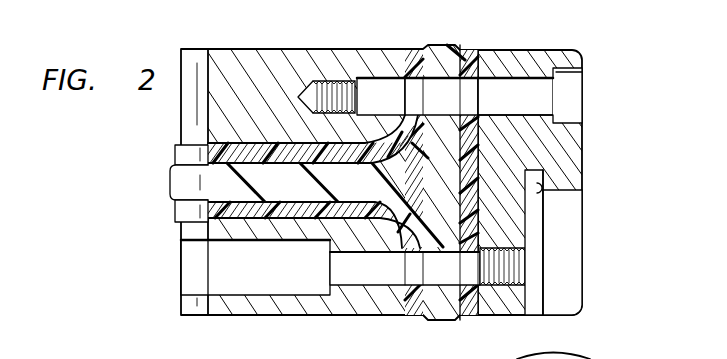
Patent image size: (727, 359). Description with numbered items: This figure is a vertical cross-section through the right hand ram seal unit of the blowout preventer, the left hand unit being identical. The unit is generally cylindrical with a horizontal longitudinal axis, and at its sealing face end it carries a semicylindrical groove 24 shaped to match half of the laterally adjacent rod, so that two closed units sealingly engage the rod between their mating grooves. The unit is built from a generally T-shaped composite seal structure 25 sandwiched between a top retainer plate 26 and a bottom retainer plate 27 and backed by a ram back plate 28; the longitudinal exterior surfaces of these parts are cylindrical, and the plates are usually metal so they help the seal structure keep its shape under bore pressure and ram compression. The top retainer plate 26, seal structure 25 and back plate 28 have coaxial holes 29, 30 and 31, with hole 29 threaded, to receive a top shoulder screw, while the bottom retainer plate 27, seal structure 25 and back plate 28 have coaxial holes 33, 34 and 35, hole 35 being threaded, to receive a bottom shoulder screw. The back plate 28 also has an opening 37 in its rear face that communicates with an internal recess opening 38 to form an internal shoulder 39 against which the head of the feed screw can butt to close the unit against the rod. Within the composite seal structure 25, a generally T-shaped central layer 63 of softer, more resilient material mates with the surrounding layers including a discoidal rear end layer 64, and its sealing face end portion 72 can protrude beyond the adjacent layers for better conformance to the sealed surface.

The semicylindrical groove 24 is at (197, 270).
The composite seal structure 25 is at (176, 150).
The top retainer plate 26 is at (228, 50).
The bottom retainer plate 27 is at (240, 316).
The ram back plate 28 is at (528, 50).
The hole 29 is at (393, 110).
The hole 30 is at (455, 110).
The hole 31 is at (531, 110).
The hole 33 is at (262, 281).
The hole 34 is at (457, 283).
The hole 35 is at (512, 267).
The opening 37 is at (568, 243).
The internal recess opening 38 is at (538, 292).
The internal shoulder 39 is at (543, 192).
The central layer 63 is at (458, 192).
The rear end layer 64 is at (471, 50).
The sealing face end portion 72 is at (170, 182).